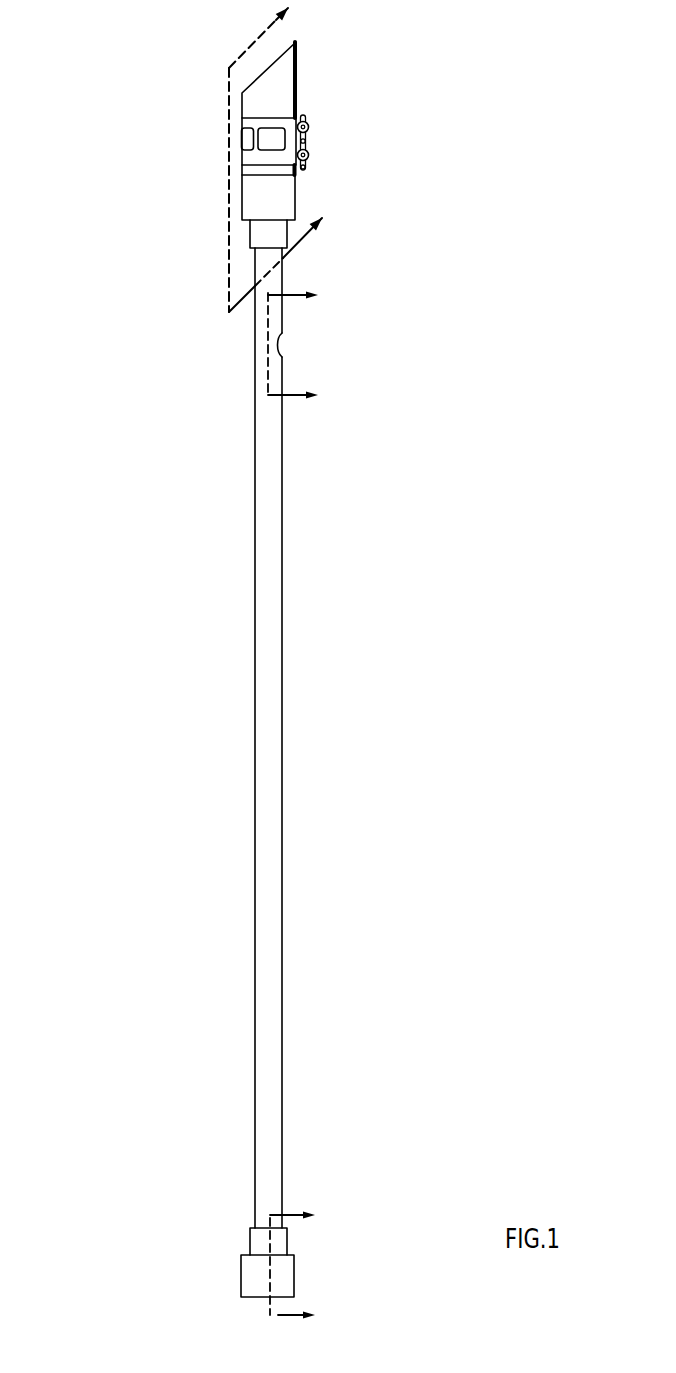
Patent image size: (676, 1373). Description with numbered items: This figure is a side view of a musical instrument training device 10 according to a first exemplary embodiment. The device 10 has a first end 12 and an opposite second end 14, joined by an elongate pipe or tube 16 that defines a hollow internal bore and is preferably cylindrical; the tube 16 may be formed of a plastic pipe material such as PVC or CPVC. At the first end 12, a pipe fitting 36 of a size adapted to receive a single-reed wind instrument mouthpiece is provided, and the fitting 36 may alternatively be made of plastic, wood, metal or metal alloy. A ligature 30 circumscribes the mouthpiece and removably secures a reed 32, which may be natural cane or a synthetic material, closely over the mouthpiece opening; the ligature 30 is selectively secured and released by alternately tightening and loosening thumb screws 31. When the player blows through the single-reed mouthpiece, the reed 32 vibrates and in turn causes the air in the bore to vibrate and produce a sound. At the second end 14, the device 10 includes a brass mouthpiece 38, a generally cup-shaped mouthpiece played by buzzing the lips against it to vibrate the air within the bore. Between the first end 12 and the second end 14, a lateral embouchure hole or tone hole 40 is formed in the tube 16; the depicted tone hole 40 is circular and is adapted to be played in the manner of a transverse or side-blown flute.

The musical instrument training device 10 is at (461, 263).
The first end 12 is at (199, 152).
The second end 14 is at (224, 1271).
The tube 16 is at (282, 747).
The ligature 30 is at (288, 122).
The thumb screws 31 is at (308, 123).
The reed 32 is at (298, 82).
The pipe fitting 36 is at (295, 190).
The brass mouthpiece 38 is at (294, 1277).
The tone hole 40 is at (282, 333).